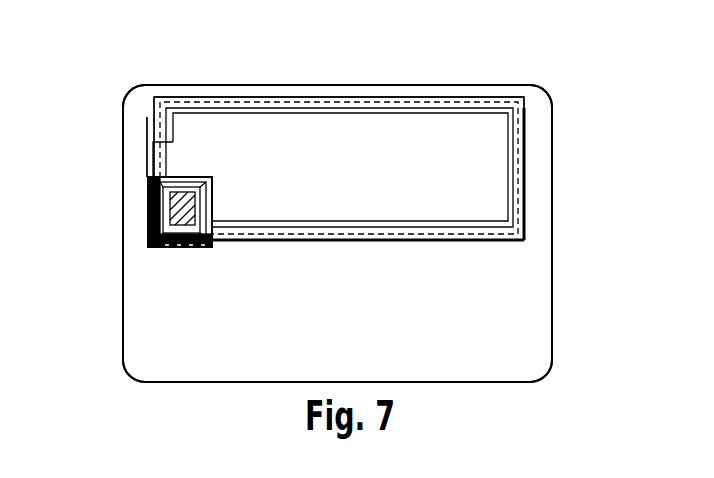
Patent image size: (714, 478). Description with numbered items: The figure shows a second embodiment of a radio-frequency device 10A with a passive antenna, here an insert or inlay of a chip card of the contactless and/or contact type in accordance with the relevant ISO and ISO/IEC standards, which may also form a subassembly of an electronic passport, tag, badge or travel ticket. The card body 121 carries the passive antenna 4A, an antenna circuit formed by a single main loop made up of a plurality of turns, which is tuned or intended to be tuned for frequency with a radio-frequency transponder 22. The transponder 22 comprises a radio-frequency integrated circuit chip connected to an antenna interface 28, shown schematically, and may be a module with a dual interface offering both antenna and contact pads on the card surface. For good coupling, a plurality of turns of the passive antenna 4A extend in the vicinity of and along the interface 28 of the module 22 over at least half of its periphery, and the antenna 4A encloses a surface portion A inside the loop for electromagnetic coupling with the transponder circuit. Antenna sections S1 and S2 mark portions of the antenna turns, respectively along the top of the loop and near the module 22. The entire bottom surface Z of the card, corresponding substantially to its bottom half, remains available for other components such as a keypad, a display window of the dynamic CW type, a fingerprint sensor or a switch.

The radio-frequency device 10A is at (568, 247).
The card body 121 is at (127, 300).
The surface portion A is at (490, 132).
The passive antenna 4A is at (533, 158).
The antenna section S1 is at (405, 96).
The antenna section S2 is at (150, 162).
The antenna interface 28 is at (213, 197).
The radio-frequency transponder 22 is at (148, 208).
The bottom surface Z is at (487, 324).